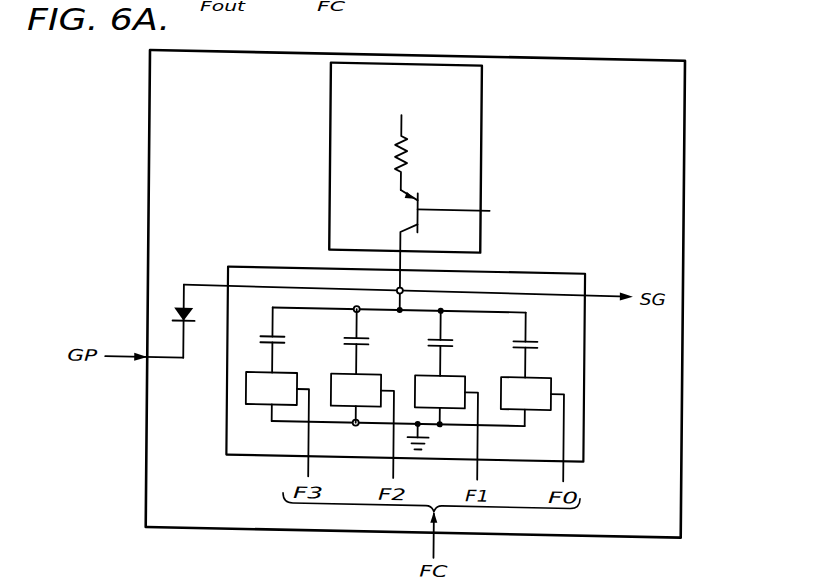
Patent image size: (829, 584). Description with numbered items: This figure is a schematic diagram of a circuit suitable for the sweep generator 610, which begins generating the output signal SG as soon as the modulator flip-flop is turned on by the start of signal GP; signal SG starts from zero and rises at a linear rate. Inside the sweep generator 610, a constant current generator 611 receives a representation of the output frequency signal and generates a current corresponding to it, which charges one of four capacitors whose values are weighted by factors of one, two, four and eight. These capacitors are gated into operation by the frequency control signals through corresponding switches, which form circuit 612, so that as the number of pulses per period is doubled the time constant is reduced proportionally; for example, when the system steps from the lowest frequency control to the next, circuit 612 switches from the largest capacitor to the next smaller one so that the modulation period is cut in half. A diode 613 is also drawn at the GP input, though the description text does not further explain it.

The sweep generator 610 is at (535, 74).
The constant current generator 611 is at (332, 76).
The capacitor switching circuit 612 is at (386, 214).
The diode 613 is at (176, 305).